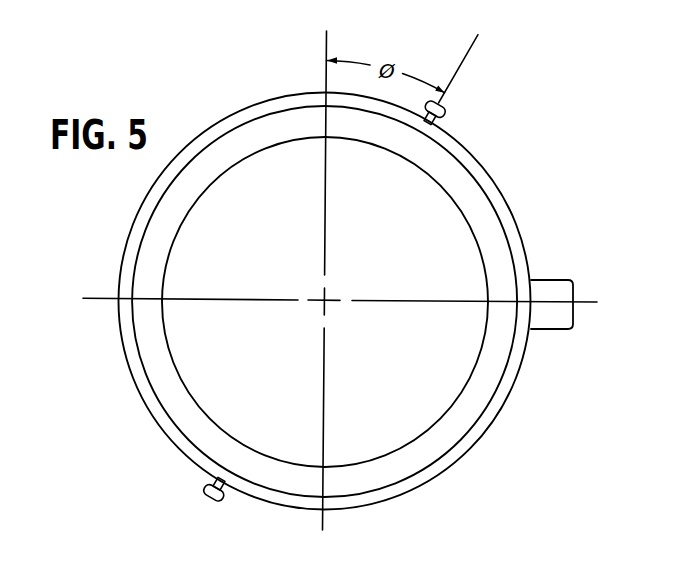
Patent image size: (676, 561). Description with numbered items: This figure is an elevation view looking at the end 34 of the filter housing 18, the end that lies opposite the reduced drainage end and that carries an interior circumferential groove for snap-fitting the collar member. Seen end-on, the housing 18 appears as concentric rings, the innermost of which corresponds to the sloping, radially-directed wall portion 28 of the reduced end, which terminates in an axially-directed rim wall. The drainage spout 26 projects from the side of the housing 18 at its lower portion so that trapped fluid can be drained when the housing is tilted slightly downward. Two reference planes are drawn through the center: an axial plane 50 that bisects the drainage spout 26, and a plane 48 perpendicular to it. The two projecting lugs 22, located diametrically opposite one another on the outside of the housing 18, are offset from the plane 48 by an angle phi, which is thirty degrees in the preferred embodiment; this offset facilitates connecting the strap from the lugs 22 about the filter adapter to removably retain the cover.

The housing 18 is at (526, 162).
The projecting lugs 22 is at (449, 110).
The drainage spout 26 is at (540, 329).
The sloping wall portion 28 is at (477, 215).
The end of housing 34 is at (518, 226).
The plane 48 is at (326, 46).
The axial plane 50 is at (413, 302).